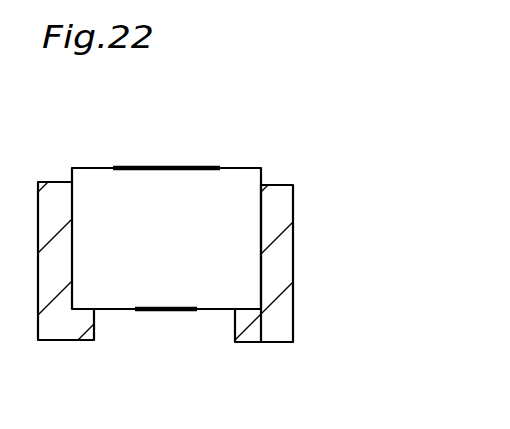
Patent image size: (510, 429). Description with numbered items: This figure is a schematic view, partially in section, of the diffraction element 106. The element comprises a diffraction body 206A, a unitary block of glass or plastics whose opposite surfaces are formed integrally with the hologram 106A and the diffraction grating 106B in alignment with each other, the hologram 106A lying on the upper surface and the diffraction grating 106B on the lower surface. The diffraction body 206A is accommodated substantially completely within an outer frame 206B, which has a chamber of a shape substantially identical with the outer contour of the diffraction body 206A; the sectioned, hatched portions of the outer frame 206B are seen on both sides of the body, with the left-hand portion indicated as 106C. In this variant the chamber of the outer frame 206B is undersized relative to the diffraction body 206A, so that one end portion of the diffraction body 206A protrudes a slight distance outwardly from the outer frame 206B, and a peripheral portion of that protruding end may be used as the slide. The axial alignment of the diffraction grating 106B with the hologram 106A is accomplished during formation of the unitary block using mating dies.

The diffraction element 106 is at (294, 310).
The hologram 106A is at (192, 143).
The diffraction grating 106B is at (163, 312).
The left holder portion 106C is at (72, 172).
The diffraction body 206A is at (248, 183).
The outer frame 206B is at (284, 262).